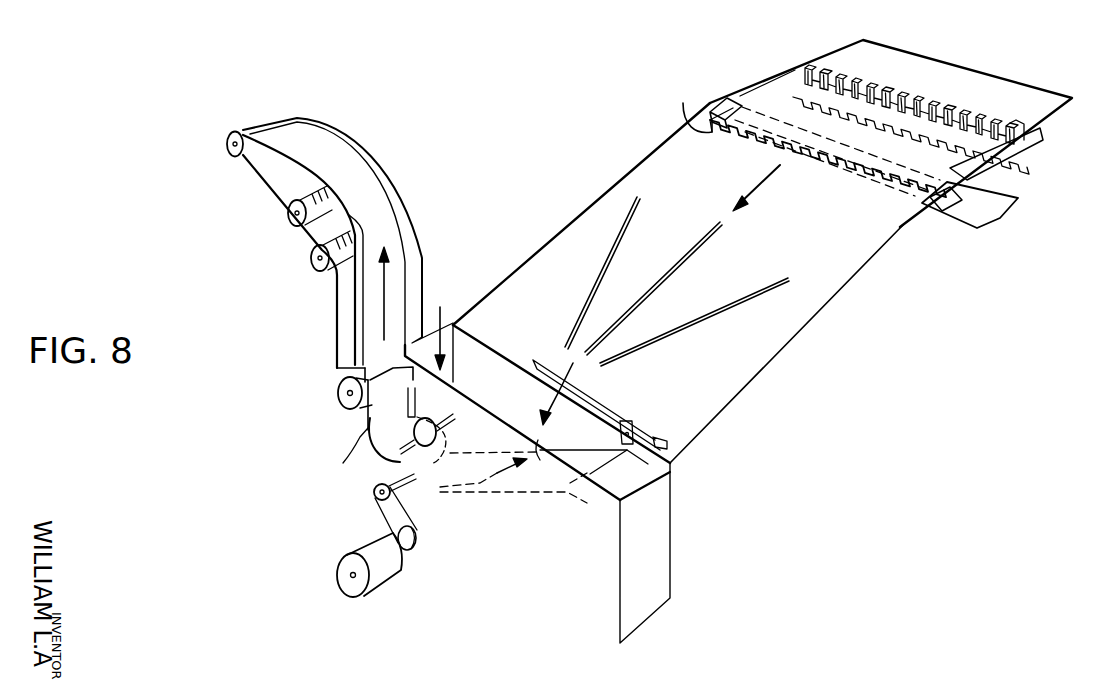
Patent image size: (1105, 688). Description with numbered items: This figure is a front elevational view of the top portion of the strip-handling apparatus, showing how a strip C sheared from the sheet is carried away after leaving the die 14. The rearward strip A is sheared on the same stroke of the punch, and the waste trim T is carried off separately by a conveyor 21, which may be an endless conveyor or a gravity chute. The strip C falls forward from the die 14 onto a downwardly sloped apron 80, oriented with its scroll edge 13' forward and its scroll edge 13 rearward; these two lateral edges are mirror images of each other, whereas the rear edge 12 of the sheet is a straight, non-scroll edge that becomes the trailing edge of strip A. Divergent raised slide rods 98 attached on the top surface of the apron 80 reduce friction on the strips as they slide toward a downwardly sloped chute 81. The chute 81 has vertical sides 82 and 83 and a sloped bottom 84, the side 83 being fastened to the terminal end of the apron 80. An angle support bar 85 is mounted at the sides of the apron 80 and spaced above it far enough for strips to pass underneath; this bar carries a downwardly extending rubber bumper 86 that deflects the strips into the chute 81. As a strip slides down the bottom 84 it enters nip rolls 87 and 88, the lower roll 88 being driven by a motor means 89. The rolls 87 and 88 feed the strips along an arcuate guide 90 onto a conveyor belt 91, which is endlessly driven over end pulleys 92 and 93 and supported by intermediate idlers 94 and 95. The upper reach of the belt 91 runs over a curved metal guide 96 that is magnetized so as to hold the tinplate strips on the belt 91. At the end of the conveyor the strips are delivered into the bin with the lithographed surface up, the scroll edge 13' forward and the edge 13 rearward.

The rear edge 12 is at (973, 70).
The scroll edge 13 is at (599, 226).
The scroll edge 13' is at (668, 279).
The die 14 is at (1043, 135).
The conveyor 21 is at (996, 200).
The trim T is at (943, 187).
The strip A is at (940, 91).
The apron 80 is at (808, 254).
The chute 81 is at (416, 308).
The vertical side 82 is at (578, 586).
The vertical side 83 is at (516, 403).
The sloped bottom 84 is at (587, 463).
The angle support bar 85 is at (647, 440).
The rubber bumper 86 is at (627, 451).
The nip roll 87 is at (452, 408).
The nip roll 88 is at (402, 472).
The motor means 89 is at (388, 556).
The arcuate guide 90 is at (367, 422).
The conveyor belt 91 is at (322, 175).
The end pulley 92 is at (337, 380).
The end pulley 93 is at (232, 155).
The intermediate idler 94 is at (295, 222).
The intermediate idler 95 is at (317, 273).
The curved metal guide 96 is at (273, 162).
The slide rods 98 is at (603, 283).
The strip C is at (407, 429).